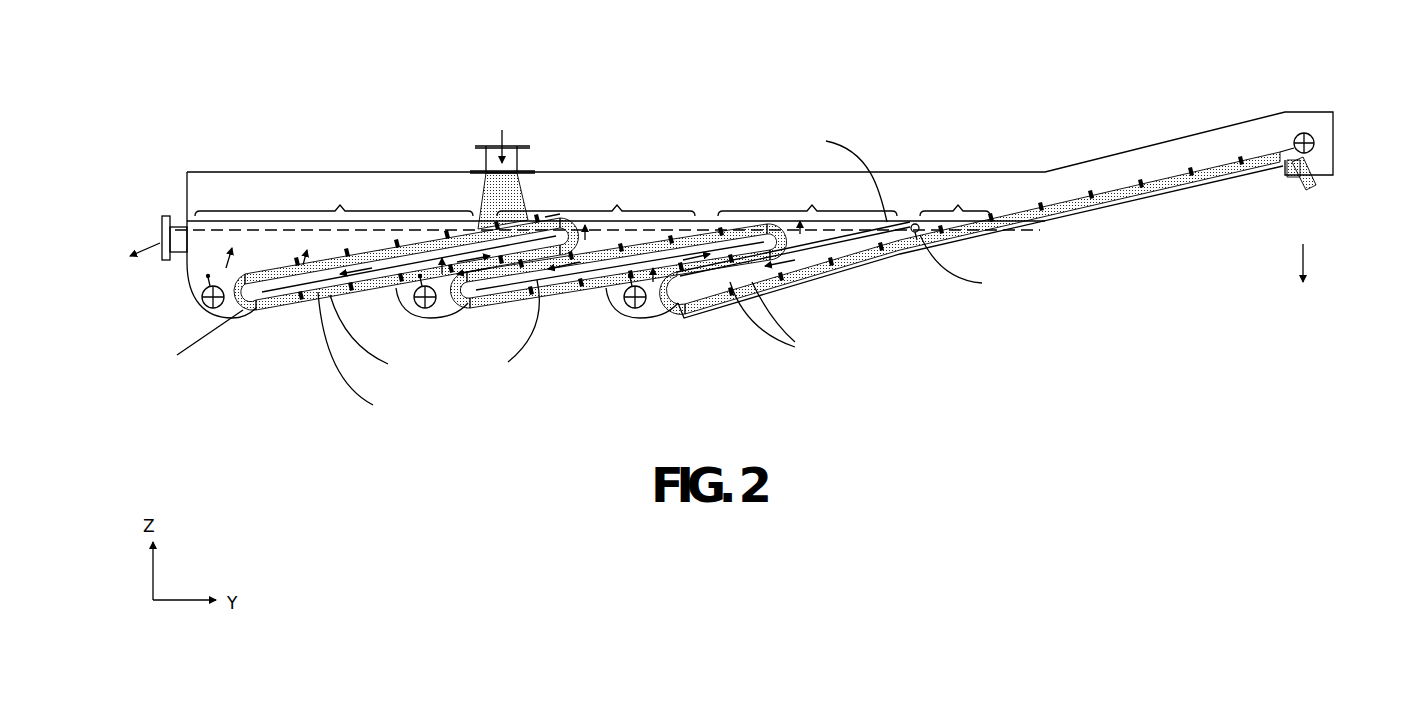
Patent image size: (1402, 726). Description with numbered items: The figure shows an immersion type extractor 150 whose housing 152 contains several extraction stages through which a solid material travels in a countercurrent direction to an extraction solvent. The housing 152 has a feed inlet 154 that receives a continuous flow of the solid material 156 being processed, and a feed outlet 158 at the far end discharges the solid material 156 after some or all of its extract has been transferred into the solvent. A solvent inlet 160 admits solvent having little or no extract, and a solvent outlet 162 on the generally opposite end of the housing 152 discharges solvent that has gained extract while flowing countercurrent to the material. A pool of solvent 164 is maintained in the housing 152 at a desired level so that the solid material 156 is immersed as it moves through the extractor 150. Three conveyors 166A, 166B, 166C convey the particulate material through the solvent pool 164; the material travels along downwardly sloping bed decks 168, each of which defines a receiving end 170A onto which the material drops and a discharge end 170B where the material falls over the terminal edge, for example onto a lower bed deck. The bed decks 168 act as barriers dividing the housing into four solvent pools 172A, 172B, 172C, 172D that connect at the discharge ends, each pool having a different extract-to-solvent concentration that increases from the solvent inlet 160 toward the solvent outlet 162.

The extractor 150 is at (202, 68).
The housing 152 is at (187, 192).
The feed inlet 154 is at (514, 130).
The solid material 156 is at (483, 197).
The feed outlet 158 is at (1333, 252).
The solvent inlet 160 is at (916, 222).
The solvent outlet 162 is at (160, 248).
The pool of solvent 164 is at (207, 220).
The first conveyor 166A is at (210, 308).
The second conveyor 166B is at (424, 306).
The third conveyor 166C is at (640, 308).
The bed deck 168 is at (548, 200).
The receiving end 170A is at (255, 312).
The discharge end 170B is at (566, 210).
The first solvent pool 172A is at (334, 197).
The second solvent pool 172B is at (596, 197).
The third solvent pool 172C is at (807, 197).
The fourth solvent pool 172D is at (955, 197).